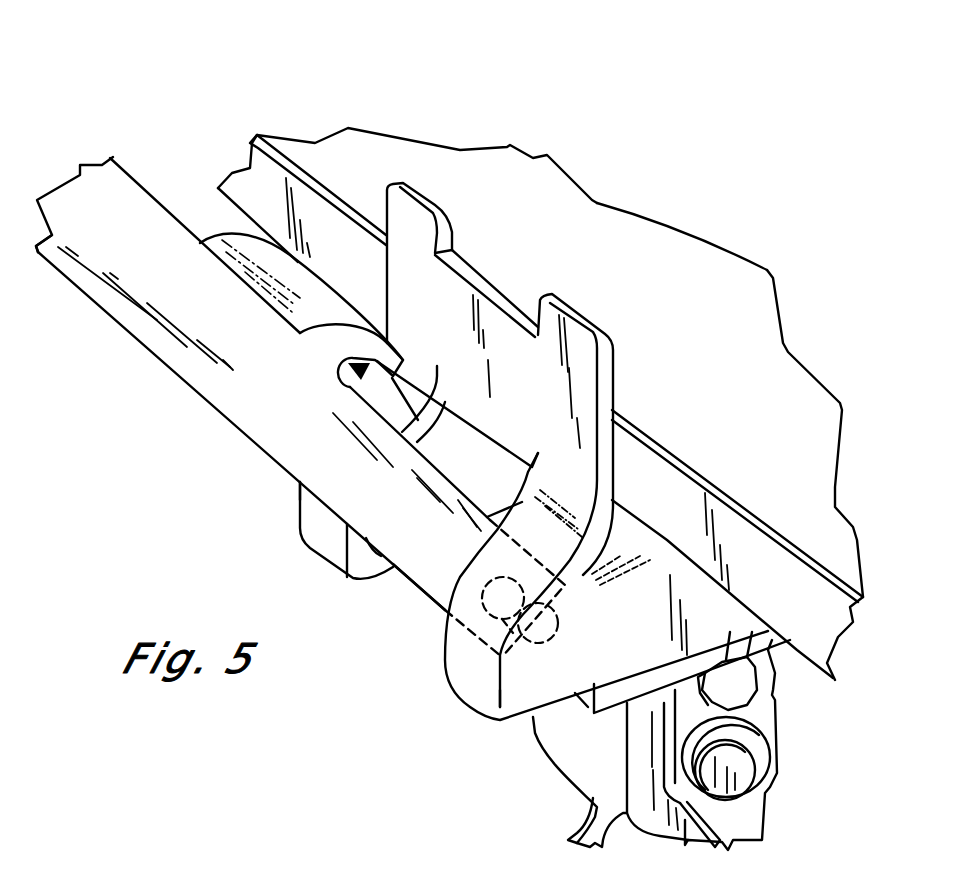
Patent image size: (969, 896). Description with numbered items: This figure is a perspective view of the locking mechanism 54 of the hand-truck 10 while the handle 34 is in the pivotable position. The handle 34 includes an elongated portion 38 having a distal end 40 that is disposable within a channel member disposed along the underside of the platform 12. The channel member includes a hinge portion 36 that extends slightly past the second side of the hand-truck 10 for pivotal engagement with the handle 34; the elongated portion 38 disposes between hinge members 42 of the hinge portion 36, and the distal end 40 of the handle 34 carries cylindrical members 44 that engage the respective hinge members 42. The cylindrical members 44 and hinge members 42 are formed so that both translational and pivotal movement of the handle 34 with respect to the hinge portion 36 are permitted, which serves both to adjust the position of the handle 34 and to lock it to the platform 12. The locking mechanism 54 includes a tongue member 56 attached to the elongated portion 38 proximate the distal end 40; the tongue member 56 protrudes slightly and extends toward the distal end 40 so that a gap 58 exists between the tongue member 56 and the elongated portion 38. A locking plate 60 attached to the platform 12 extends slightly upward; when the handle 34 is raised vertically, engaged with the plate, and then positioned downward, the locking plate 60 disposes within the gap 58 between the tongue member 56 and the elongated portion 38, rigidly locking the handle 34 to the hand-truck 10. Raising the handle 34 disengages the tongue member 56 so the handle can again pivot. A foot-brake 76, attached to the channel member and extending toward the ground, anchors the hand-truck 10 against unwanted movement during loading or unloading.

The hand-truck 10 is at (339, 90).
The platform 12 is at (618, 208).
The handle 34 is at (94, 162).
The hinge portion 36 is at (302, 546).
The elongated portion 38 is at (60, 272).
The distal end 40 is at (409, 595).
The hinge members 42 is at (498, 656).
The cylindrical members 44 is at (545, 627).
The locking mechanism 54 is at (624, 289).
The tongue member 56 is at (325, 300).
The gap 58 is at (433, 430).
The locking plate 60 is at (609, 372).
The foot-brake 76 is at (767, 720).